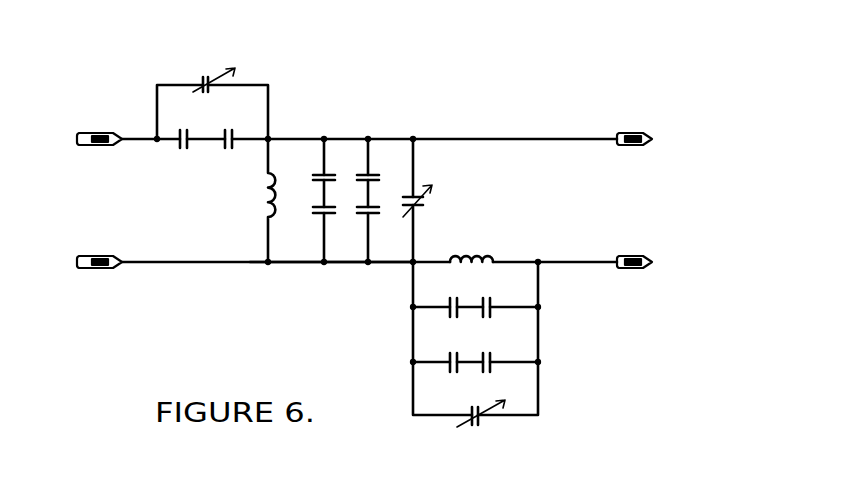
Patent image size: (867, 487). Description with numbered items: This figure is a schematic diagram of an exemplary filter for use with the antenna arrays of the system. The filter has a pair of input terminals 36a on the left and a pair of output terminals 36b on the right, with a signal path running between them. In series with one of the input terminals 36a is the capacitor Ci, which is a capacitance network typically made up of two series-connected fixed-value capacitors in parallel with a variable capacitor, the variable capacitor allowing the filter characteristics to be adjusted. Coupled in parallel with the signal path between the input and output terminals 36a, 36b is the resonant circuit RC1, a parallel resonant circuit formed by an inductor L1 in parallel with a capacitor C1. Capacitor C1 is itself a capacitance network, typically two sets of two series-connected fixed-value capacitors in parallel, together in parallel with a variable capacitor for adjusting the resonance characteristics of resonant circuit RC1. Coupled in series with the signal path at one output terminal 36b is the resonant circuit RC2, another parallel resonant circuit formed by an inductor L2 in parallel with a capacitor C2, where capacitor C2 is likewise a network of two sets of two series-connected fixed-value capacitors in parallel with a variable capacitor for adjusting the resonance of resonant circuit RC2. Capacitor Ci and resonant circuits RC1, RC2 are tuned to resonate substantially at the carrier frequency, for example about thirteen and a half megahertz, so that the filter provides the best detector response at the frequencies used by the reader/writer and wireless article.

The input terminals 36a is at (98, 152).
The output terminals 36b is at (654, 137).
The capacitor Ci is at (261, 74).
The capacitor C1 is at (421, 126).
The inductor L1 is at (265, 202).
The resonant circuit RC1 is at (404, 272).
The inductor L2 is at (488, 254).
The capacitor C2 is at (398, 300).
The resonant circuit RC2 is at (494, 338).